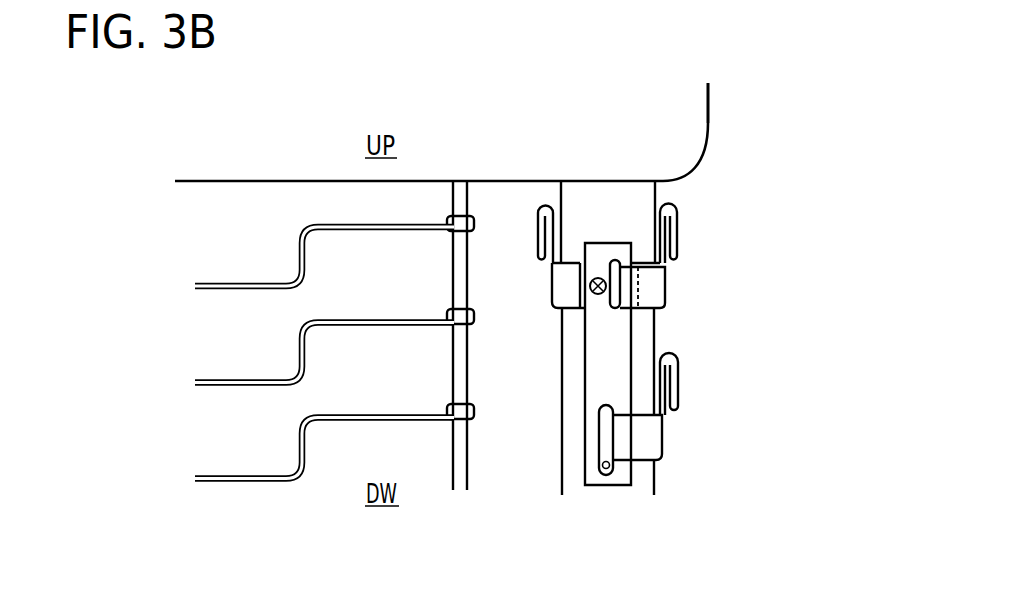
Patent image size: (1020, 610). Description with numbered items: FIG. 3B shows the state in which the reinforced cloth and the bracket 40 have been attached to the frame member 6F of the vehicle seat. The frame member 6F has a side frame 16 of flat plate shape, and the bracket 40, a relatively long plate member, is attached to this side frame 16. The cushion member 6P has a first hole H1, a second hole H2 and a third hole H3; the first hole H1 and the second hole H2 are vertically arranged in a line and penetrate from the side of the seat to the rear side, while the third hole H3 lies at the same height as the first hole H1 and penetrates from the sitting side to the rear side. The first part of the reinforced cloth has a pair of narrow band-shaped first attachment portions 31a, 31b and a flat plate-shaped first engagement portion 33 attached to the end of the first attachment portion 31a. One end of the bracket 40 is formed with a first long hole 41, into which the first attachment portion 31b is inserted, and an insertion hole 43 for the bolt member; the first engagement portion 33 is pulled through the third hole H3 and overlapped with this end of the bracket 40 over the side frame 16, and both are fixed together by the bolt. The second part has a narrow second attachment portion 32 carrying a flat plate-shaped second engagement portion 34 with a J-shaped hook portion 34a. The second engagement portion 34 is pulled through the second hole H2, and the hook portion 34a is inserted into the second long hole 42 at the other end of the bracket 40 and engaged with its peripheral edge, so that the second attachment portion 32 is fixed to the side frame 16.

The side frame 16 is at (612, 193).
The frame member 6F is at (755, 124).
The cushion member 6P is at (564, 167).
The bracket 40 is at (612, 336).
The first long hole 41 is at (608, 257).
The insertion hole 43 is at (598, 278).
The first engagement portion 33 is at (578, 300).
The first attachment portion 31a is at (556, 287).
The first attachment portion 31b is at (653, 284).
The second attachment portion 32 is at (662, 433).
The second engagement portion 34 is at (597, 427).
The hook portion 34a is at (324, 353).
The second long hole 42 is at (598, 466).
The first hole H1 is at (668, 213).
The second hole H2 is at (670, 377).
The third hole H3 is at (545, 212).